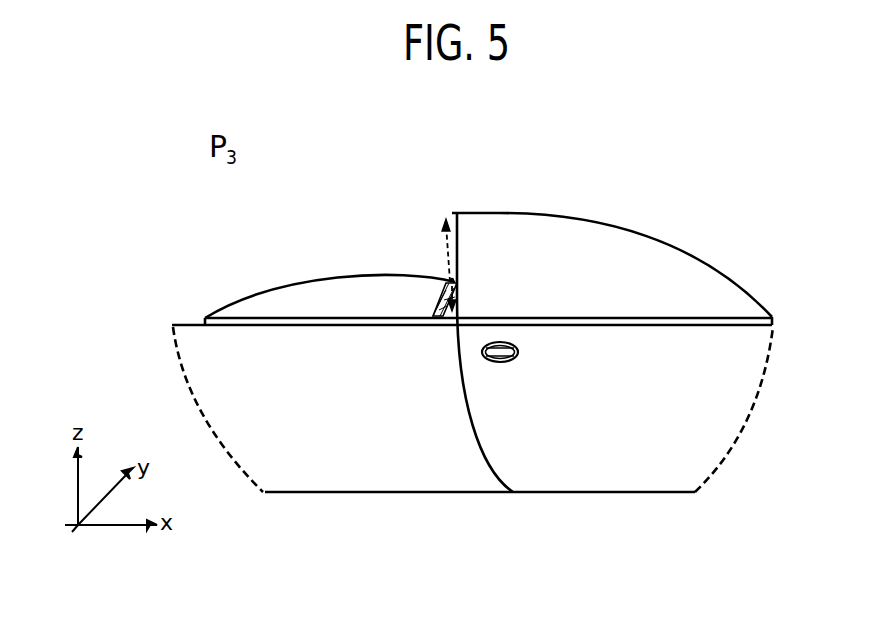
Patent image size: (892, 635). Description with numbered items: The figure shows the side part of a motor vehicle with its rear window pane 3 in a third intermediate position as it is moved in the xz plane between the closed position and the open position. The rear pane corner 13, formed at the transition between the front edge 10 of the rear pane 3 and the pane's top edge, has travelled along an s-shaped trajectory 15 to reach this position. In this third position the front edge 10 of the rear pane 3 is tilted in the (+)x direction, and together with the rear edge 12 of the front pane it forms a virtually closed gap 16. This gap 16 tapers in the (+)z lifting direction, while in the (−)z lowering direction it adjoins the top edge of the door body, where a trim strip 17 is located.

The rear pane 3 is at (307, 293).
The front edge 10 is at (450, 284).
The rear edge 12 is at (460, 293).
The rear pane corner 13 is at (452, 279).
The trajectory 15 is at (452, 279).
The gap 16 is at (460, 297).
The trim strip 17 is at (267, 317).